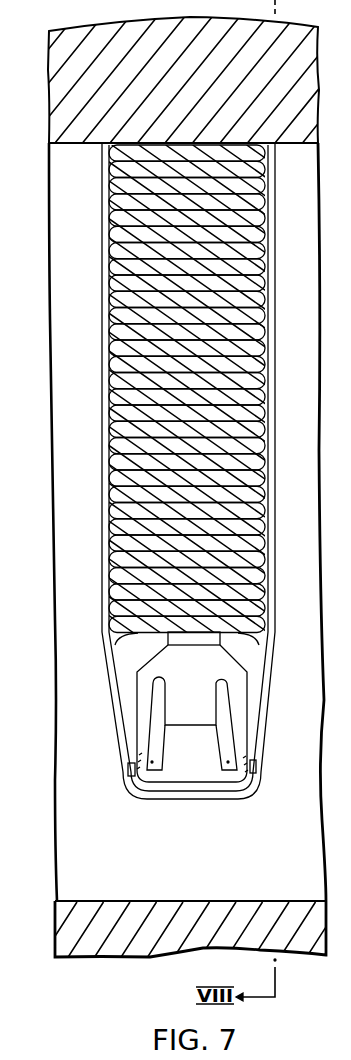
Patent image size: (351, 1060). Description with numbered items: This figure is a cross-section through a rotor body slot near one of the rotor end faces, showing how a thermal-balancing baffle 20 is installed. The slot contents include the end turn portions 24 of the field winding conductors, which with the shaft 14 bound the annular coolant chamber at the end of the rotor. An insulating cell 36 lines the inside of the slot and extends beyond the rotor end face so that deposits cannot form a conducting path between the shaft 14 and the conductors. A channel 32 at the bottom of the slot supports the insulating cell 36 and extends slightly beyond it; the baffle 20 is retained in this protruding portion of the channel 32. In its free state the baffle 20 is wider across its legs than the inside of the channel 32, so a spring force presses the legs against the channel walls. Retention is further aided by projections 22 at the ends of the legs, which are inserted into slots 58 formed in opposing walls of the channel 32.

The shaft 14 is at (183, 900).
The baffle 20 is at (173, 725).
The projections 22 is at (128, 776).
The end turn portions 24 is at (118, 335).
The channel 32 is at (125, 650).
The insulating cell 36 is at (102, 283).
The slots 58 is at (243, 747).